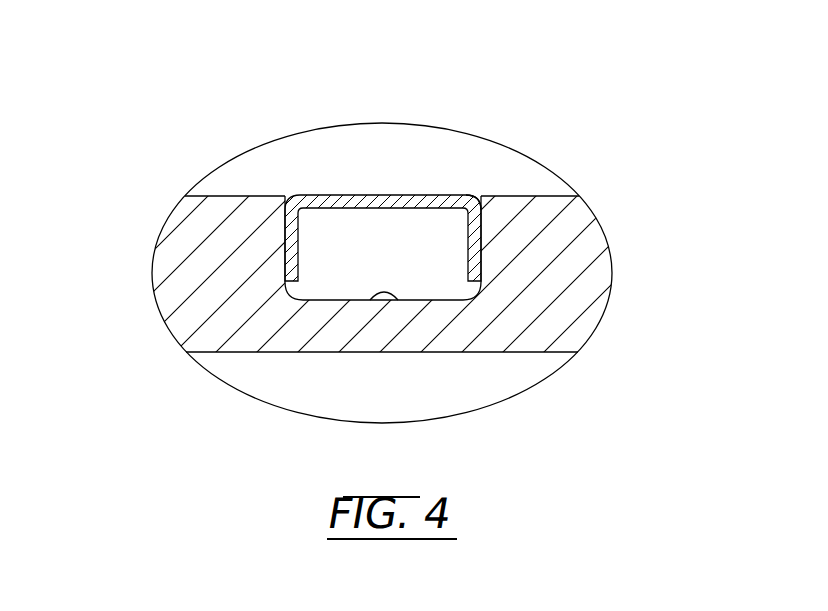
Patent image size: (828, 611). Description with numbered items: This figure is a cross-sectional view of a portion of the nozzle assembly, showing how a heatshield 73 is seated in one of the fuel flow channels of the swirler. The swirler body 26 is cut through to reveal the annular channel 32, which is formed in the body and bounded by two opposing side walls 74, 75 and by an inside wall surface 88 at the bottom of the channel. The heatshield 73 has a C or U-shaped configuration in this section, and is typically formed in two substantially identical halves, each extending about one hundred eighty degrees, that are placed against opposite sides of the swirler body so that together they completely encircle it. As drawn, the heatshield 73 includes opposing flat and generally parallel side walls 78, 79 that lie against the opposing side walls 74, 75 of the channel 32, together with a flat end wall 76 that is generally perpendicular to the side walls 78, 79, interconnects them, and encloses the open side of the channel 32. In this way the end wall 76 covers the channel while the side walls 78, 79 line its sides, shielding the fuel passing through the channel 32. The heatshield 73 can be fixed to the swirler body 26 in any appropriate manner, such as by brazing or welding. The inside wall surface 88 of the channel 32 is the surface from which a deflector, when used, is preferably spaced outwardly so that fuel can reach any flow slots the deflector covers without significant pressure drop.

The swirler body 26 is at (555, 313).
The annular channel 32 is at (362, 220).
The heatshield 73 is at (458, 197).
The side wall of the channel 74 is at (285, 243).
The side wall of the channel 75 is at (481, 247).
The end wall 76 is at (388, 195).
The side wall 78 is at (292, 243).
The side wall 79 is at (478, 247).
The inside wall surface 88 is at (379, 296).